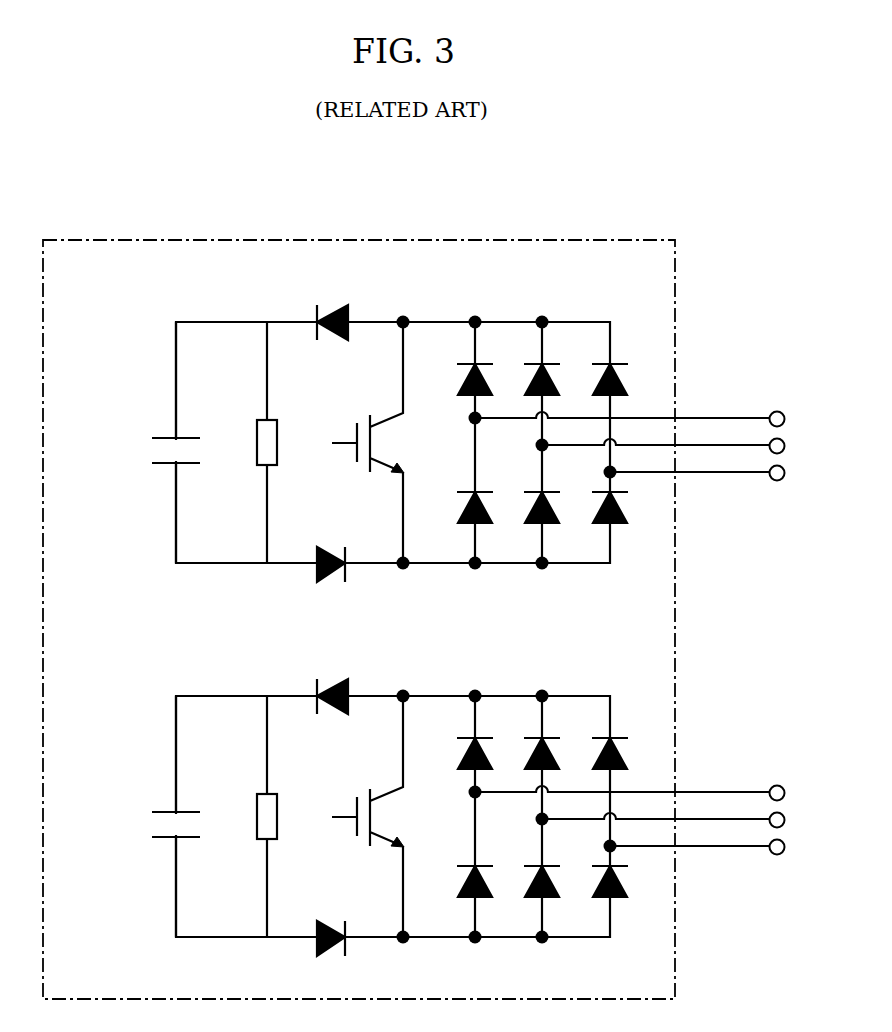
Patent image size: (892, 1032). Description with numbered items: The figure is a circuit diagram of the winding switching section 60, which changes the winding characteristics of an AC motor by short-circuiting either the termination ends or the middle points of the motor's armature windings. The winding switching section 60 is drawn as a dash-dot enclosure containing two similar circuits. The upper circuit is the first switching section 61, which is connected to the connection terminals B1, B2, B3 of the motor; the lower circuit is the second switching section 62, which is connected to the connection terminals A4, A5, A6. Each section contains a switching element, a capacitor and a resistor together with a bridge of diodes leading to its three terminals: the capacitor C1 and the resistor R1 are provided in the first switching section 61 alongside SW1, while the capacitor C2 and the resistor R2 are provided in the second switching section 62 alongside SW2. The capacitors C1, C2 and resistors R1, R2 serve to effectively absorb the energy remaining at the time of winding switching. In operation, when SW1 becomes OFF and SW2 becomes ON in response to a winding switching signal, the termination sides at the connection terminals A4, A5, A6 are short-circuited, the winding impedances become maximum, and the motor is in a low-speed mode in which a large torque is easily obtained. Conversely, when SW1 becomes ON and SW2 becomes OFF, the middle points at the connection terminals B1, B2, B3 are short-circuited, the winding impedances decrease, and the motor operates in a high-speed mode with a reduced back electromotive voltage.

The winding switching section 60 is at (568, 240).
The first switching section 61 is at (148, 366).
The second switching section 62 is at (148, 732).
The capacitor C1 is at (186, 442).
The resistor R1 is at (282, 442).
The switch of first switching section SW1 is at (366, 442).
The connection terminal B1 is at (711, 474).
The connection terminal B2 is at (677, 447).
The connection terminal B3 is at (643, 420).
The capacitor C2 is at (186, 816).
The resistor R2 is at (282, 816).
The switch of second switching section SW2 is at (366, 816).
The connection terminal A4 is at (711, 848).
The connection terminal A5 is at (677, 821).
The connection terminal A6 is at (643, 794).